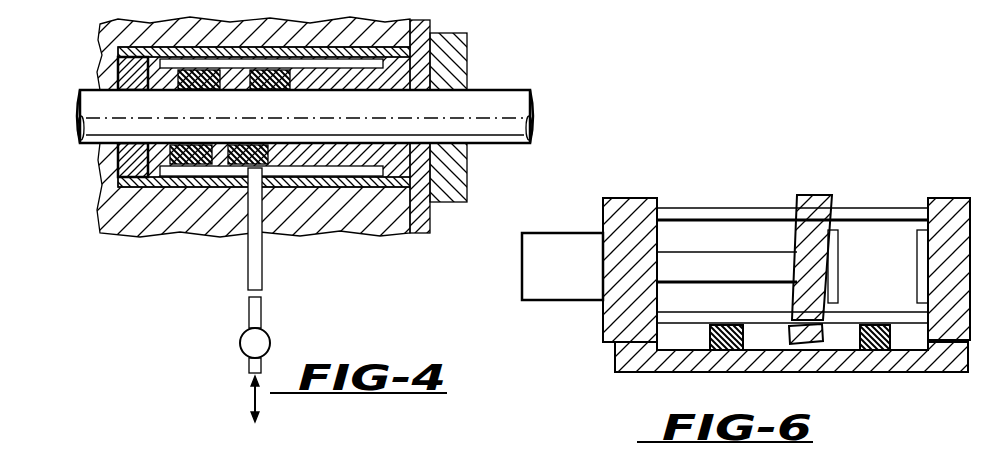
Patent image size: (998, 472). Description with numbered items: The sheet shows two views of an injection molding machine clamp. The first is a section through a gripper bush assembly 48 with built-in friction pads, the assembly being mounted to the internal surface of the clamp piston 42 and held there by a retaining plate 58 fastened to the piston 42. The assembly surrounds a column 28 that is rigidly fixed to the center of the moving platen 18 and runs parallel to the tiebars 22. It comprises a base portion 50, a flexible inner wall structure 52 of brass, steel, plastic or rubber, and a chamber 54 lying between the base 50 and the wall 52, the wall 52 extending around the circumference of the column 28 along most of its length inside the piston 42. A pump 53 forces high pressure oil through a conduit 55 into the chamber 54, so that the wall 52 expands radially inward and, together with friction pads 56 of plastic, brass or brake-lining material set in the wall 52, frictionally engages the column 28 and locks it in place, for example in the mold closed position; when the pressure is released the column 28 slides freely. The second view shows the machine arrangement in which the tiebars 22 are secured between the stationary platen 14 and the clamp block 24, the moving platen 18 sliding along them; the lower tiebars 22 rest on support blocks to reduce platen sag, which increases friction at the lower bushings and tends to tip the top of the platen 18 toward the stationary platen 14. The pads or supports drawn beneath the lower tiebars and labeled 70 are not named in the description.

In FIG. 6, the stationary platen 14 is at (938, 200).
In FIG. 6, the moving platen 18 is at (815, 196).
In FIG. 6, the tiebars 22 is at (727, 208).
In FIG. 6, the clamp block 24 is at (638, 206).
In FIG. 4, the column 28 is at (503, 98).
In FIG. 6, the column 28 is at (760, 262).
In FIG. 4, the clamp piston 42 is at (108, 28).
In FIG. 4, the gripper bush assembly 48 is at (105, 184).
In FIG. 4, the base portion 50 is at (415, 225).
In FIG. 4, the flexible inner wall structure 52 is at (312, 205).
In FIG. 4, the pump 53 is at (242, 348).
In FIG. 4, the chamber 54 is at (140, 182).
In FIG. 4, the conduit 55 is at (249, 260).
In FIG. 4, the friction pads 56 is at (205, 172).
In FIG. 4, the retaining plate 58 is at (470, 184).
In FIG. 6, the seal pad 70 is at (710, 345).